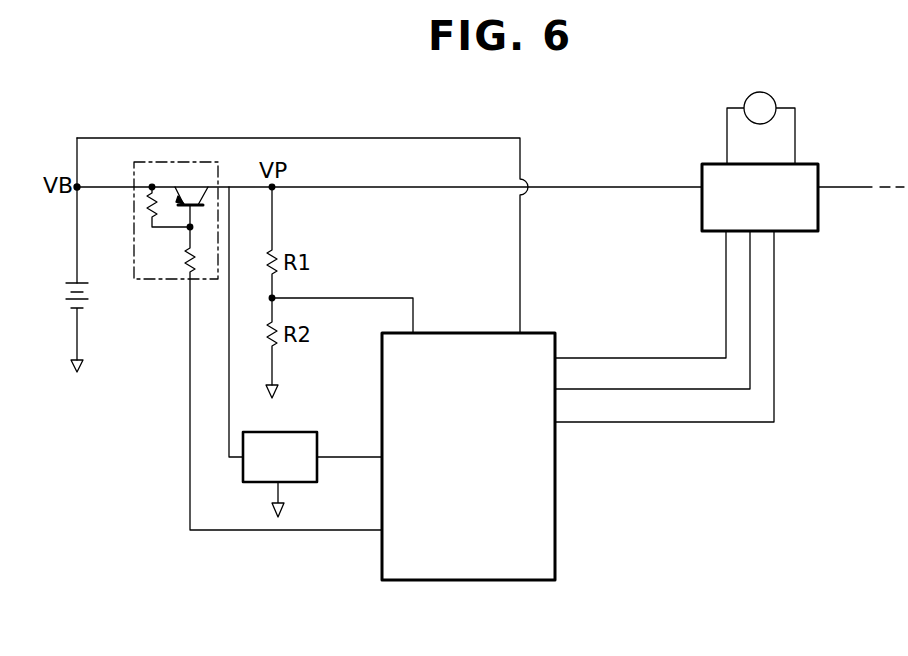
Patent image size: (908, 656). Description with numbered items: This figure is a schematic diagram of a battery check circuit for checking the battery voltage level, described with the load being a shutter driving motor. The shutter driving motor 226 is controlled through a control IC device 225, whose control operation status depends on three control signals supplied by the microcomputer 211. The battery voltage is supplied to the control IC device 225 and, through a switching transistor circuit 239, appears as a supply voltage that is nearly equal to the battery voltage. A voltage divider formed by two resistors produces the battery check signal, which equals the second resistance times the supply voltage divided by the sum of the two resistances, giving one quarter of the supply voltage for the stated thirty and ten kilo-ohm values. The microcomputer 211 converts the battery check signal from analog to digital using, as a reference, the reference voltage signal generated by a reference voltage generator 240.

The switching transistor circuit 239 is at (173, 178).
The reference voltage generating circuit 240 is at (250, 483).
The control circuit 211 is at (460, 582).
The control IC device 225 is at (819, 213).
The connector terminal device 226 is at (767, 93).